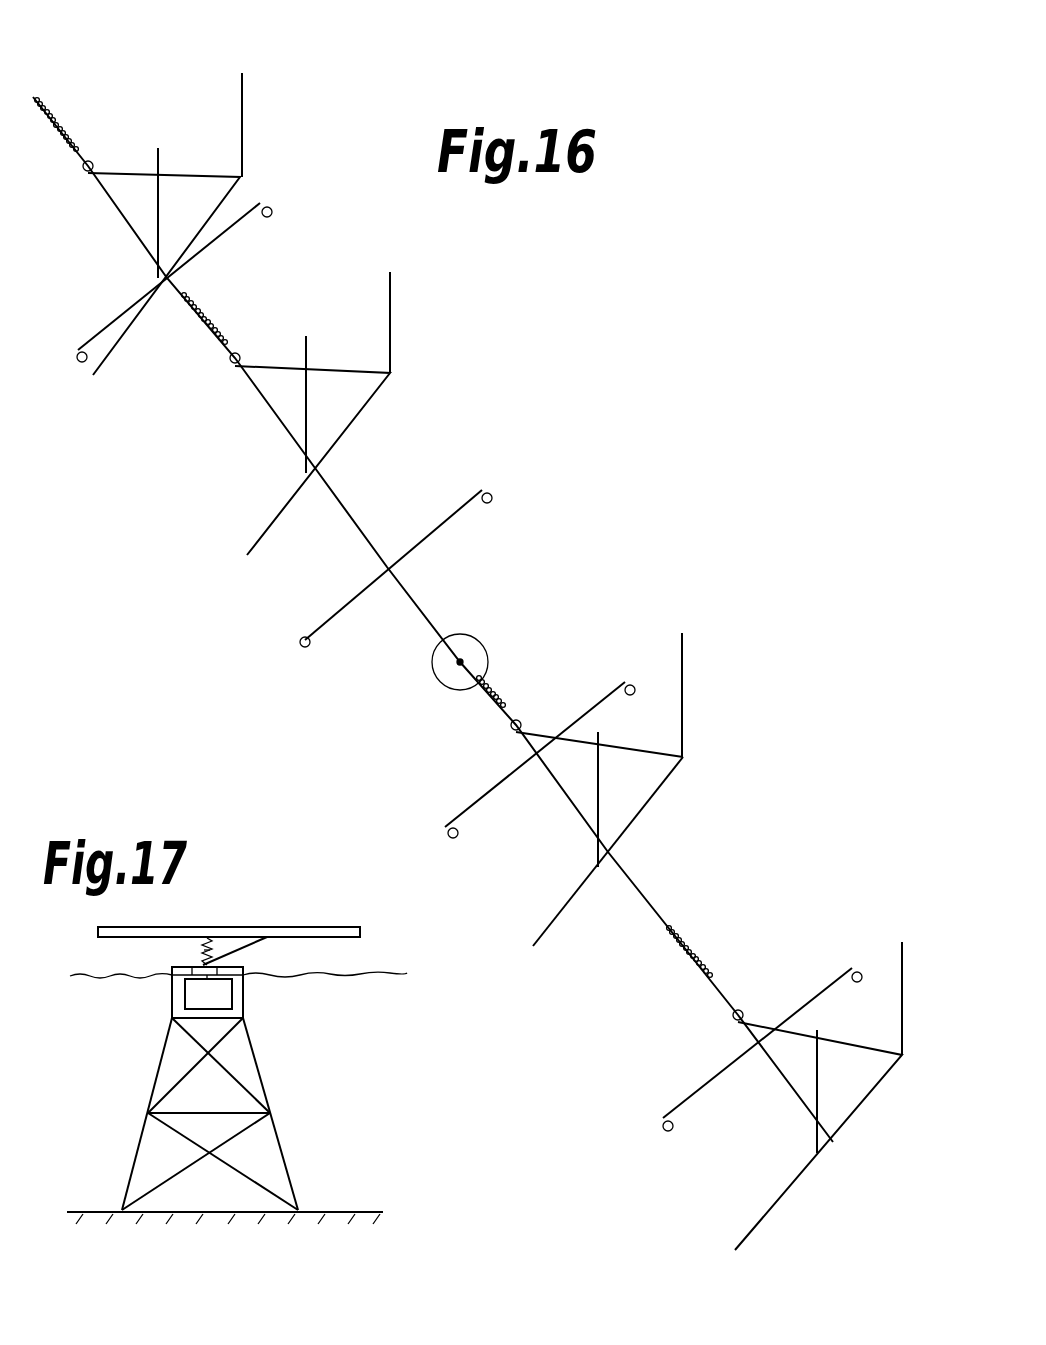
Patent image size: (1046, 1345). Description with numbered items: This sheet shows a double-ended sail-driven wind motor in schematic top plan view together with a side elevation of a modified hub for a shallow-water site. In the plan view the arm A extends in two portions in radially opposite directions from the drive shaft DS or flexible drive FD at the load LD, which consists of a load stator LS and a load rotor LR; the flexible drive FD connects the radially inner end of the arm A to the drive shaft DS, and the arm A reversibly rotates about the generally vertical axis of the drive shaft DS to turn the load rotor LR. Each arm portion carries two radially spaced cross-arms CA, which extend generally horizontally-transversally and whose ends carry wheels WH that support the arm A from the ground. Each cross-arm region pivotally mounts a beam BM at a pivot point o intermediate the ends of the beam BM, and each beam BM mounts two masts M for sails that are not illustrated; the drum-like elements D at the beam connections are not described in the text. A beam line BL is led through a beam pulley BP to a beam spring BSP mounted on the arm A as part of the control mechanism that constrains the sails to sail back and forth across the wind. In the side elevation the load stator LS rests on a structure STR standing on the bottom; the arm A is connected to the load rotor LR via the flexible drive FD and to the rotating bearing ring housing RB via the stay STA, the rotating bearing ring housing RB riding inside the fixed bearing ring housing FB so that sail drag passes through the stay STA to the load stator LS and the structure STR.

In FIG. 16, the arm A is at (415, 602).
In FIG. 17, the arm A is at (297, 927).
In FIG. 16, the drum D is at (80, 156).
In FIG. 16, the beam BM is at (238, 188).
In FIG. 16, the mast M is at (682, 693).
In FIG. 16, the beam line BL is at (615, 745).
In FIG. 16, the beam pulley BP is at (508, 733).
In FIG. 16, the cross-arm CA is at (223, 233).
In FIG. 16, the wheels WH is at (493, 497).
In FIG. 16, the load LD is at (482, 637).
In FIG. 16, the flexible drive FD is at (467, 662).
In FIG. 17, the flexible drive FD is at (208, 943).
In FIG. 16, the drive shaft DS is at (527, 651).
In FIG. 16, the beam spring BSP is at (487, 700).
In FIG. 16, the pivot point o is at (511, 712).
In FIG. 17, the rotating bearing ring housing RB is at (200, 955).
In FIG. 17, the stay STA is at (243, 952).
In FIG. 17, the fixed bearing ring housing FB is at (185, 968).
In FIG. 17, the load stator LS is at (242, 993).
In FIG. 17, the load rotor LR is at (237, 1002).
In FIG. 17, the structure STR is at (267, 1087).